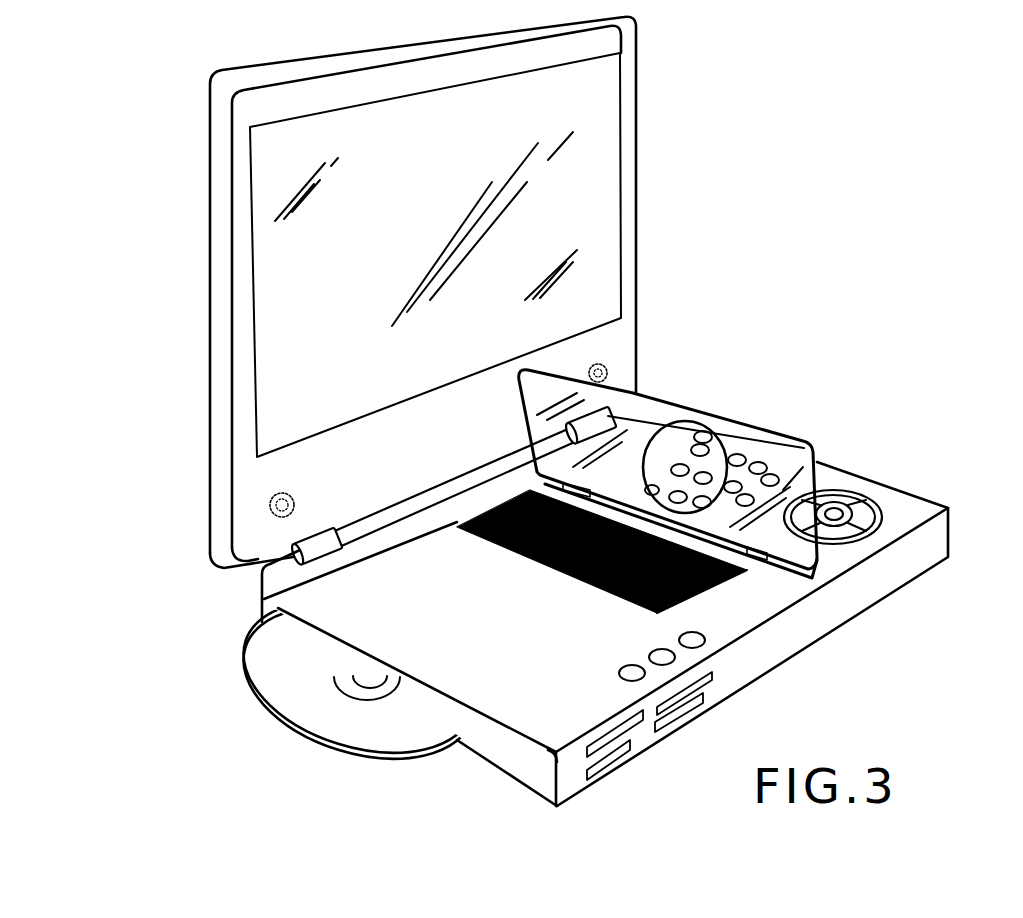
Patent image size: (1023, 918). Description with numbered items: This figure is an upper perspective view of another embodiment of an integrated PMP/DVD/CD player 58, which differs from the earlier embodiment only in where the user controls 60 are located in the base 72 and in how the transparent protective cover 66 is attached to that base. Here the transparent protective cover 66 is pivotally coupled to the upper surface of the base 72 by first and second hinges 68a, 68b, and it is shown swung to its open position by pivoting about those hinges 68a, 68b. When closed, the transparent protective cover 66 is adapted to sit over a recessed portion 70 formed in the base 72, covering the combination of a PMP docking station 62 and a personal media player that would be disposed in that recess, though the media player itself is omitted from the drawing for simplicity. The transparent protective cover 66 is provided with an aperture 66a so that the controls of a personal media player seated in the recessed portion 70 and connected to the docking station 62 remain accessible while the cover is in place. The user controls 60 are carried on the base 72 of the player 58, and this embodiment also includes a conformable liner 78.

The integrated PMP/DVD/CD player 58 is at (578, 411).
The user controls 60 is at (817, 463).
The PMP docking station 62 is at (747, 600).
The transparent protective cover 66 is at (785, 430).
The aperture 66a is at (703, 432).
The first hinge 68a is at (505, 546).
The second hinge 68b is at (767, 560).
The recessed portion 70 is at (264, 599).
The base 72 is at (920, 507).
The conformable liner 78 is at (693, 597).